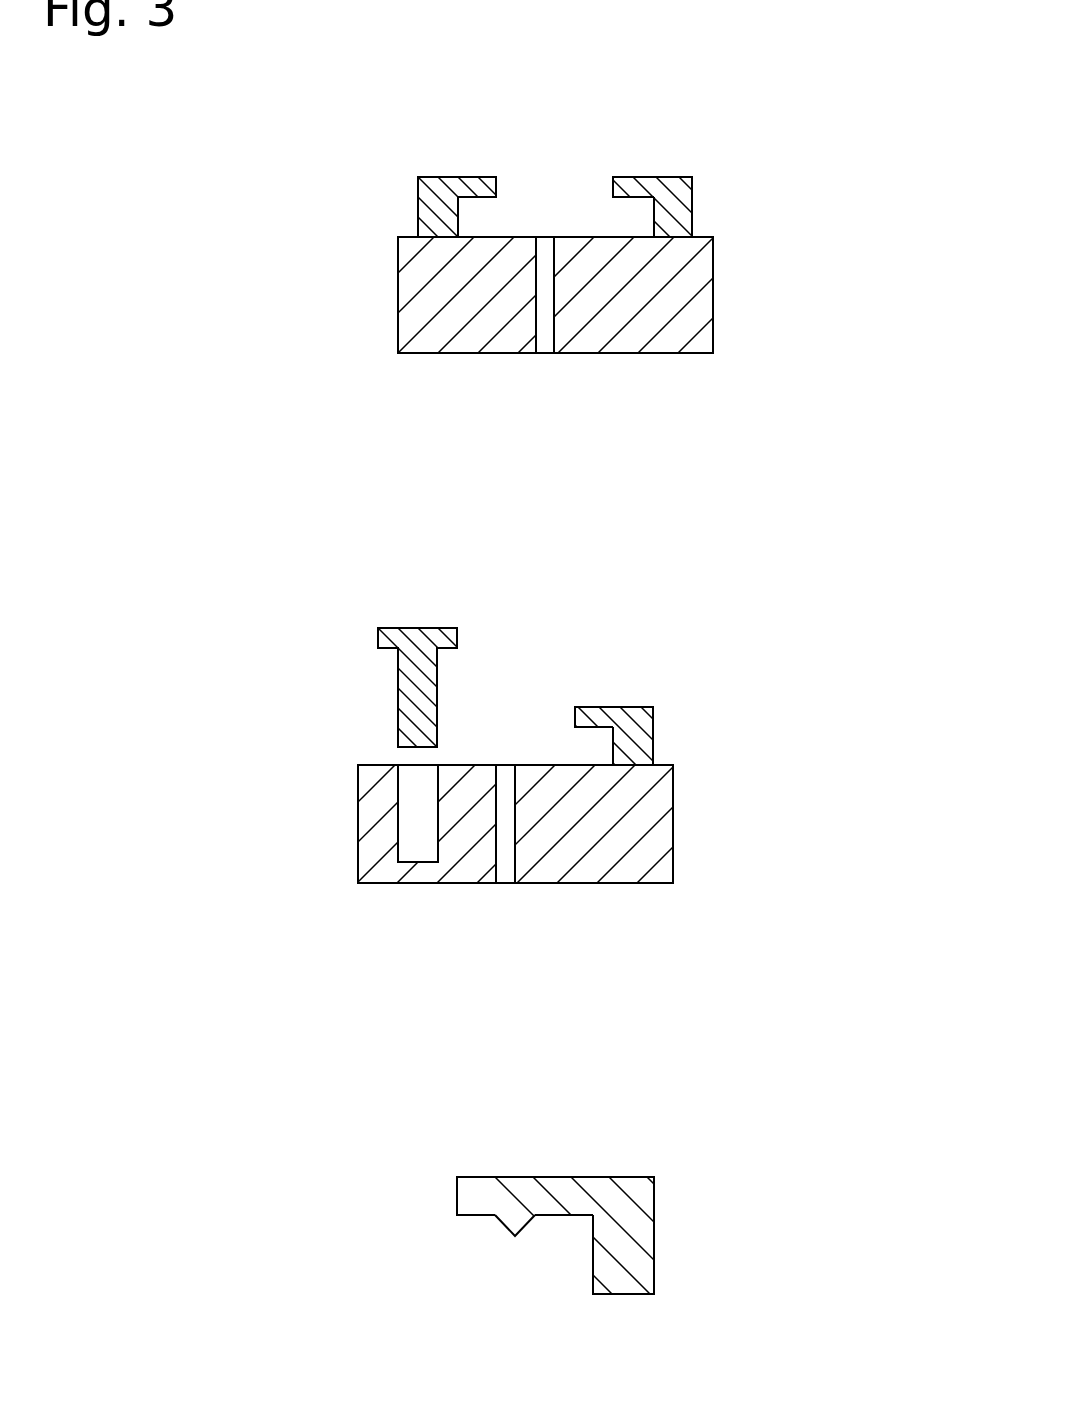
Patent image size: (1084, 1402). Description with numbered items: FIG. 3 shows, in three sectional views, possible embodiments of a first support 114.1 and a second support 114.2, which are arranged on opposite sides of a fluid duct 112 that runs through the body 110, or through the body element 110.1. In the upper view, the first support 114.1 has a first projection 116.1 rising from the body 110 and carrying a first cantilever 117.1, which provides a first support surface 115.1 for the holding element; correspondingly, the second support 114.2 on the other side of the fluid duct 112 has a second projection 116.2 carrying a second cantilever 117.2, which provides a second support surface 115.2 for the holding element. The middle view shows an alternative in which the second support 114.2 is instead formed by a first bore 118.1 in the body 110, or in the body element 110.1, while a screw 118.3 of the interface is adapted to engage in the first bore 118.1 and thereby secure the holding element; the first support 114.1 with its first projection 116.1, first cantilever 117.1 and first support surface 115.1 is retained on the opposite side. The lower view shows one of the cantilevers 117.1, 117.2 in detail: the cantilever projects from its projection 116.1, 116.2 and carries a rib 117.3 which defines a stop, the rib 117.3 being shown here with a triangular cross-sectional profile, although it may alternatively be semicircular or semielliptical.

The body 110 is at (536, 611).
The body element 110.1 is at (515, 942).
The fluid duct 112 is at (550, 248).
The first support 114.1 is at (559, 697).
The second support 114.2 is at (451, 375).
The first support surface 115.1 is at (632, 193).
The second support surface 115.2 is at (477, 193).
The first projection 116.1 is at (683, 213).
The second projection 116.2 is at (440, 205).
The first cantilever 117.1 is at (525, 722).
The second cantilever 117.2 is at (460, 180).
The rib 117.3 is at (515, 1225).
The first bore 118.1 is at (417, 793).
The screw 118.3 is at (418, 637).